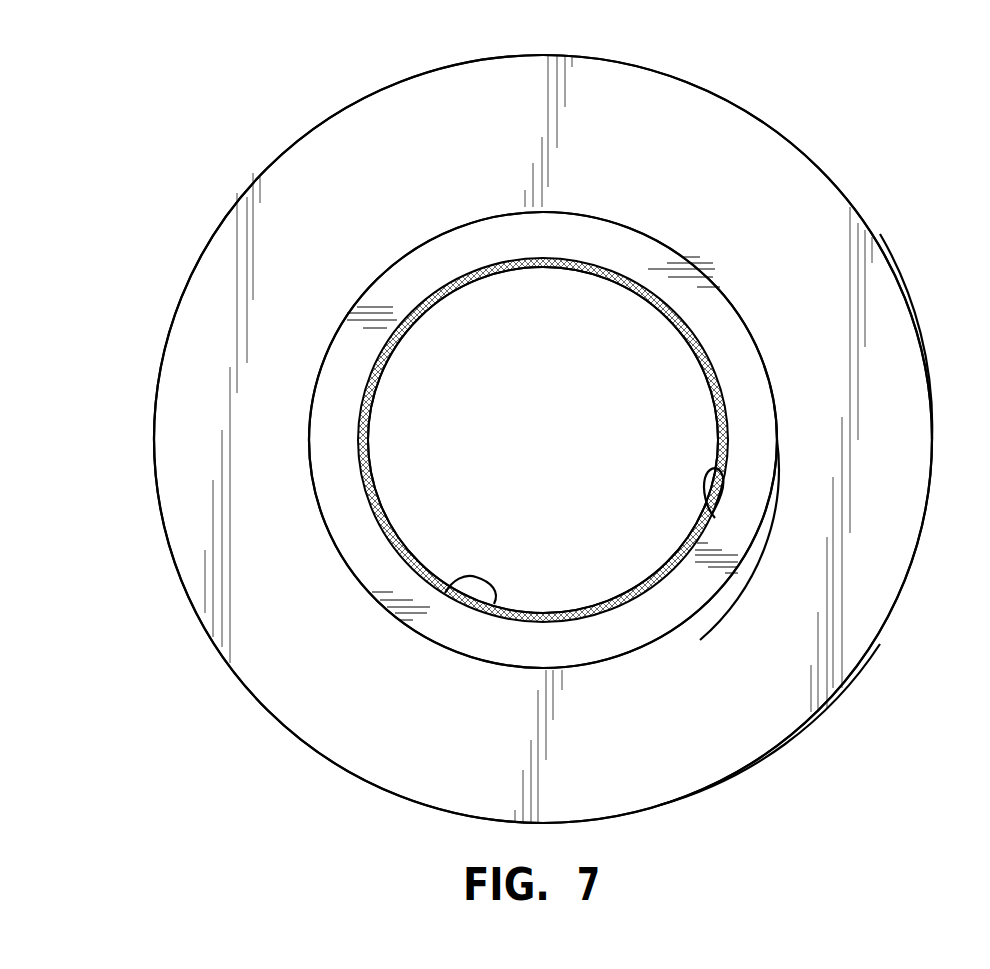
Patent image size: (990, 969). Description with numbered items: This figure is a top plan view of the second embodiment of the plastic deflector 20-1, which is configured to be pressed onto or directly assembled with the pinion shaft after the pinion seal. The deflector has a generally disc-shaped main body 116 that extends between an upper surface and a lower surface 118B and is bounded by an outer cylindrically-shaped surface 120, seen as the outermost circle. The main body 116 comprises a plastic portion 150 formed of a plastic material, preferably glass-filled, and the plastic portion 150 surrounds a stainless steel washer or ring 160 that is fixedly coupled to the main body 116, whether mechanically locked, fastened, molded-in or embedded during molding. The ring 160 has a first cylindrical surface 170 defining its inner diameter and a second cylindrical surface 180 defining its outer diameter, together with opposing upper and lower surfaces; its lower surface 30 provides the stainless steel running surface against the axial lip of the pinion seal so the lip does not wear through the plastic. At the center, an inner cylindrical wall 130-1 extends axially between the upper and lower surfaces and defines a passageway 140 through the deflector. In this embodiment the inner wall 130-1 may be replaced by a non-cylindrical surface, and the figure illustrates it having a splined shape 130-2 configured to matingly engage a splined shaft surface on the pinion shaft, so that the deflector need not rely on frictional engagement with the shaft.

The plastic deflector 20-1 is at (247, 102).
The outer cylindrically-shaped surface 120 is at (268, 163).
The disc-shaped main body 116 is at (924, 352).
The lower surface 118B is at (710, 732).
The plastic portion 150 is at (575, 263).
The lower surface of the ring 30 is at (738, 332).
The stainless steel ring 160 is at (772, 363).
The passageway 140 is at (477, 320).
The splined shape 130-2 is at (357, 447).
The inner cylindrical wall 130-1 is at (445, 593).
The first cylindrical surface 170 is at (715, 518).
The second cylindrical surface 180 is at (775, 481).